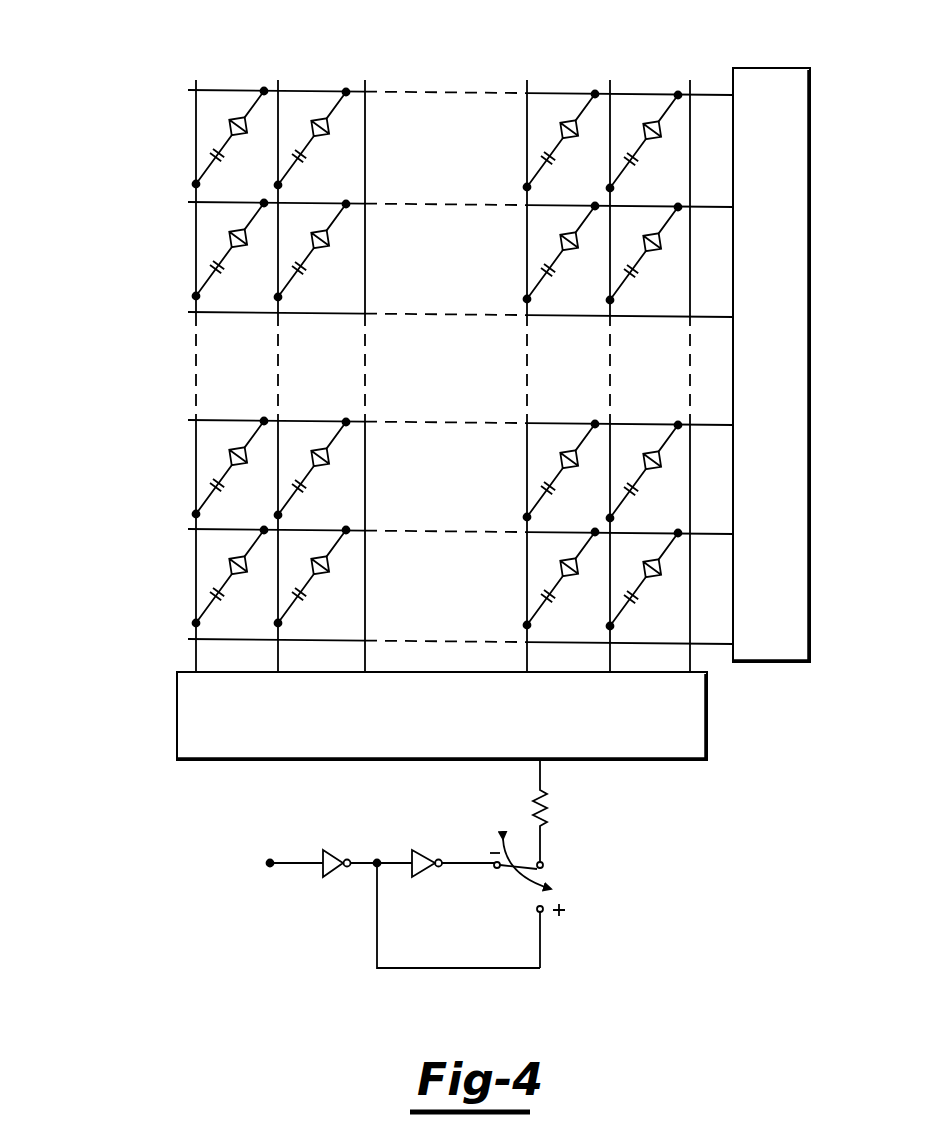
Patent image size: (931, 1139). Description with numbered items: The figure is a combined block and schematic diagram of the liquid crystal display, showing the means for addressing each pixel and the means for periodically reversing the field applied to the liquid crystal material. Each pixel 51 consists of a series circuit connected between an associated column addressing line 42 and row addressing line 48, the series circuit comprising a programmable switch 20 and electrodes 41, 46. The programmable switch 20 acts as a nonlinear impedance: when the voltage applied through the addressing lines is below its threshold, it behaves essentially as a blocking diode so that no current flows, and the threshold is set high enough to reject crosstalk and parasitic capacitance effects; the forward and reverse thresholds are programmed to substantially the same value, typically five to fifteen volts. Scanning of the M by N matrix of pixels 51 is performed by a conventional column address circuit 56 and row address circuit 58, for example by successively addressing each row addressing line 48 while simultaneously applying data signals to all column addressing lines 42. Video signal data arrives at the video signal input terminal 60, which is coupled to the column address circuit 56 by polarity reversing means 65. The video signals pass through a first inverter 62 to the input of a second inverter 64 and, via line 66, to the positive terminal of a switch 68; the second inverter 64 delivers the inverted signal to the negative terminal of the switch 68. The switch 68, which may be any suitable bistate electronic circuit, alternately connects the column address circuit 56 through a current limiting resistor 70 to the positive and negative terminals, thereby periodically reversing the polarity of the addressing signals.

The programmable switch 20 is at (233, 118).
The electrode 41 is at (214, 158).
The column addressing line 42 is at (195, 227).
The electrode 46 is at (217, 147).
The row addressing line 48 is at (317, 90).
The pixel 51 is at (553, 131).
The column address circuit 56 is at (670, 738).
The row address circuit 58 is at (780, 570).
The video signal input terminal 60 is at (240, 903).
The first inverter 62 is at (327, 850).
The second inverter 64 is at (415, 855).
The means for periodically reversing polarity 65 is at (550, 969).
The line 66 is at (453, 968).
The switch 68 is at (521, 868).
The current limiting resistor 70 is at (544, 800).